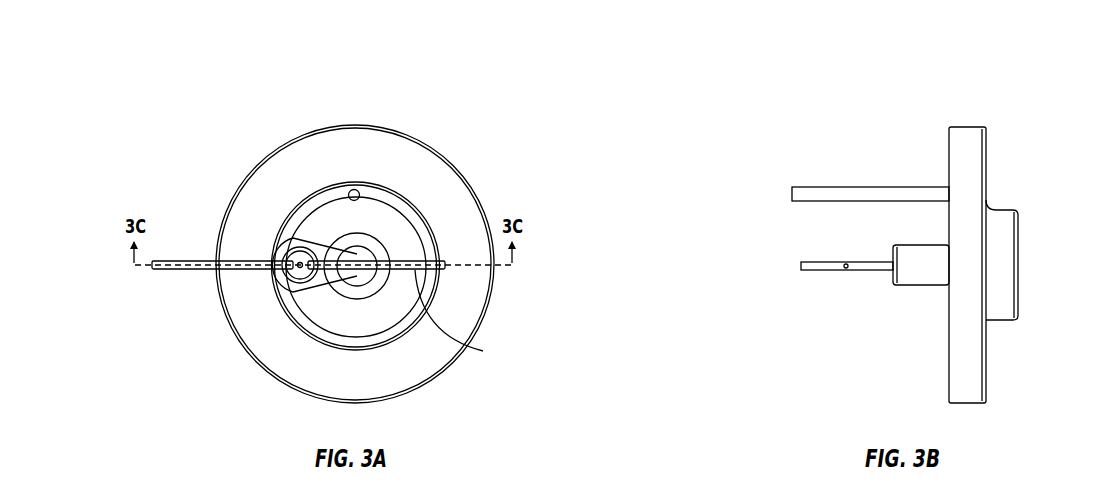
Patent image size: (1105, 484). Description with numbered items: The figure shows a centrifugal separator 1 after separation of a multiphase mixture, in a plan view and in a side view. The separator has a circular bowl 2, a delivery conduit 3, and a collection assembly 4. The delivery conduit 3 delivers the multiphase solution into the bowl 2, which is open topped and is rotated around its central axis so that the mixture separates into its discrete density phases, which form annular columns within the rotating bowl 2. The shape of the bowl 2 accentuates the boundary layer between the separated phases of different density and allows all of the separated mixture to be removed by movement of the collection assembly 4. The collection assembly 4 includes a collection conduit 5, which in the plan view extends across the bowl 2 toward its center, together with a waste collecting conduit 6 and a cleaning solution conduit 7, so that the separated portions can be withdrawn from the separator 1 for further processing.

In FIG. 3B, the centrifugal separator 1 is at (832, 265).
In FIG. 3A, the circular bowl 2 is at (281, 369).
In FIG. 3B, the circular bowl 2 is at (987, 358).
In FIG. 3A, the delivery conduit 3 is at (348, 192).
In FIG. 3B, the delivery conduit 3 is at (830, 186).
In FIG. 3B, the collection assembly 4 is at (895, 305).
In FIG. 3A, the collection conduit 5 is at (172, 271).
In FIG. 3A, the waste collecting conduit 6 is at (483, 351).
In FIG. 3B, the cleaning solution conduit 7 is at (831, 271).